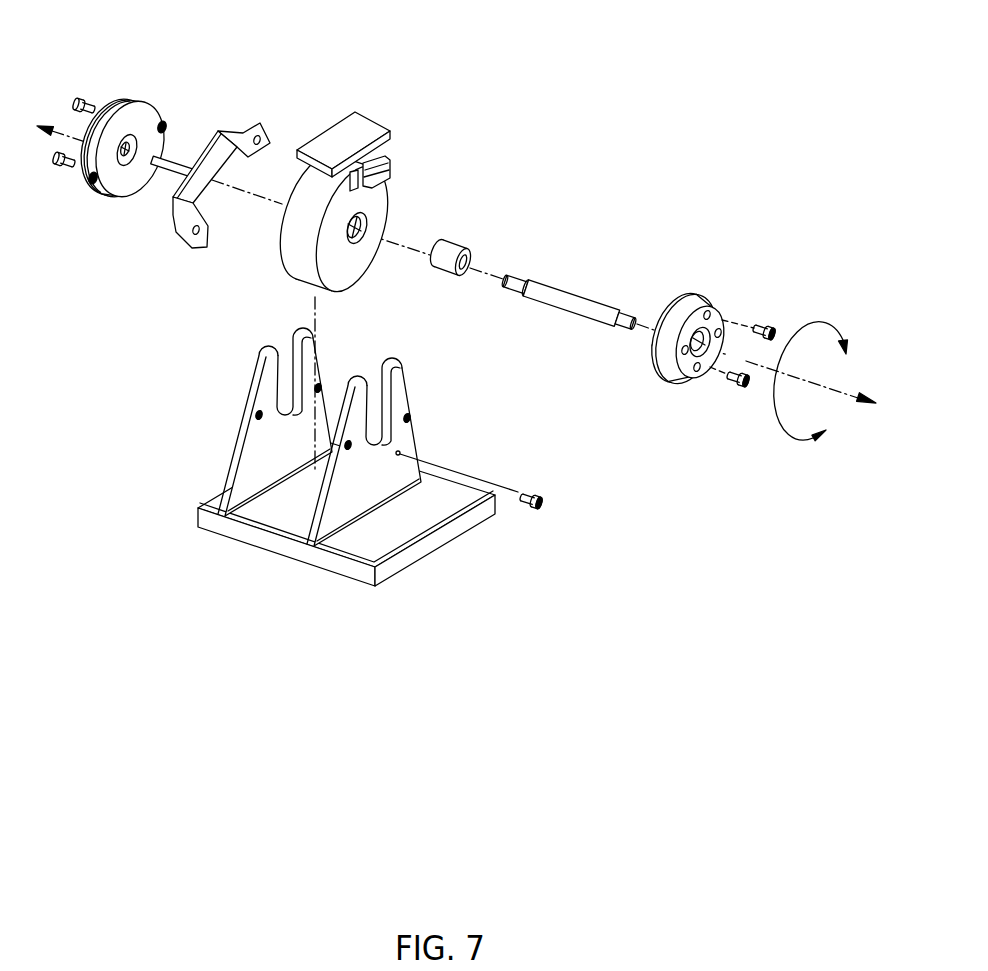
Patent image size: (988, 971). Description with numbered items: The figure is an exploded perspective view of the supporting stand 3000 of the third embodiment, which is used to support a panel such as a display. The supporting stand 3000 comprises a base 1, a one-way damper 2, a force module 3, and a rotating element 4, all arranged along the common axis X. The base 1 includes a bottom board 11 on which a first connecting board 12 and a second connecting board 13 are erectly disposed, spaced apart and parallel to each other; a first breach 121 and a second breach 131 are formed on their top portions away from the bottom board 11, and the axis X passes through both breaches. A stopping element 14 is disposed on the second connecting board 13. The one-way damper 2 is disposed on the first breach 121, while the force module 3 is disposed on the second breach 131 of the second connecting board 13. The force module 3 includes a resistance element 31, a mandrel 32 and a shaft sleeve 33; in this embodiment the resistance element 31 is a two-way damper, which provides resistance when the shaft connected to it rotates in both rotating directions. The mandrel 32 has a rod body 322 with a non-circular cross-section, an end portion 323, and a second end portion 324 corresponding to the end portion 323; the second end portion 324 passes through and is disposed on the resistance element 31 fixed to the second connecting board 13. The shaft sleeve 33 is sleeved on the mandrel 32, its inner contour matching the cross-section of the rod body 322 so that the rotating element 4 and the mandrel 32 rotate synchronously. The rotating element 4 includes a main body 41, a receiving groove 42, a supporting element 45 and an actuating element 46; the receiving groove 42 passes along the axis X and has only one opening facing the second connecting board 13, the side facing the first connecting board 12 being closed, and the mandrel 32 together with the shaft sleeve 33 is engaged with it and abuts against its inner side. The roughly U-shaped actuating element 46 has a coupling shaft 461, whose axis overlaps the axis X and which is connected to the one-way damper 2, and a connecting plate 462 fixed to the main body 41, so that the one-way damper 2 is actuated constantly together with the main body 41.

The supporting stand 3000 is at (782, 58).
The base 1 is at (412, 532).
The bottom board 11 is at (270, 523).
The first connecting board 12 is at (255, 453).
The first breach 121 is at (277, 389).
The second connecting board 13 is at (412, 438).
The second breach 131 is at (377, 413).
The stopping element 14 is at (527, 488).
The one-way damper 2 is at (118, 108).
The force module 3 is at (733, 242).
The resistance element 31 is at (720, 311).
The mandrel 32 is at (540, 296).
The rod body 322 is at (565, 297).
The end portion 323 is at (517, 273).
The second end portion 324 is at (632, 315).
The shaft sleeve 33 is at (462, 244).
The rotating element 4 is at (207, 16).
The main body 41 is at (297, 263).
The receiving groove 42 is at (366, 222).
The supporting element 45 is at (351, 124).
The actuating element 46 is at (157, 46).
The coupling shaft 461 is at (182, 157).
The connecting plate 462 is at (227, 133).